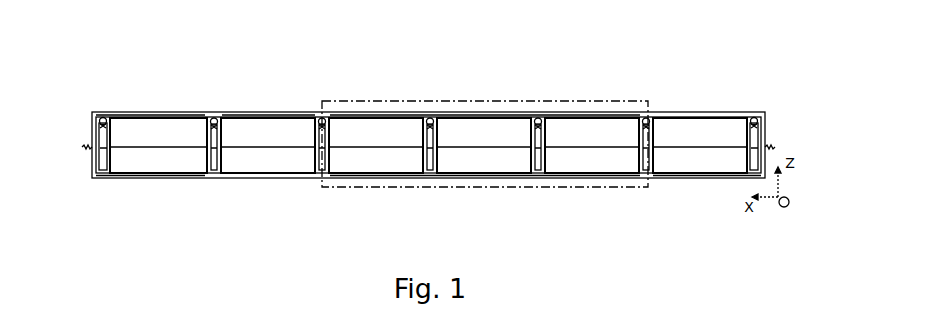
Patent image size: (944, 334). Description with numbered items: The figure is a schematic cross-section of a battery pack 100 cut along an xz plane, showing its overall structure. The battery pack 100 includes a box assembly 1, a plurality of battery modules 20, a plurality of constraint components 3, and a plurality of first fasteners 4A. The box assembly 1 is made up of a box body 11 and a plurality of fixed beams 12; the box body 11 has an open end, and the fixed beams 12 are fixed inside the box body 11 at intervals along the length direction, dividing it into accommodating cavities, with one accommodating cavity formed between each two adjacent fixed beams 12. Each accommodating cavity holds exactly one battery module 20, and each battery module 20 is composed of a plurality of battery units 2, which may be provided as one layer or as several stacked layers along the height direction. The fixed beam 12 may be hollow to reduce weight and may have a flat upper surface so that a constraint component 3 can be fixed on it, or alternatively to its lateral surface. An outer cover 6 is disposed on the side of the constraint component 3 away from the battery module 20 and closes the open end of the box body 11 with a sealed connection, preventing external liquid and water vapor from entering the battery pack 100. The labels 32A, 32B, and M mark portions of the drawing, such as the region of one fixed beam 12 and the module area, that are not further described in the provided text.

The battery pack 100 is at (452, 33).
The box assembly 1 is at (300, 180).
The battery unit 2 is at (157, 170).
The constraint component 3 is at (257, 113).
The battery module 20 is at (140, 112).
The first fastener 4A is at (213, 120).
The outer cover 6 is at (375, 113).
The box body 11 is at (368, 180).
The fixed beam 12 is at (429, 177).
The first partition portion 32A is at (537, 118).
The second partition portion 32B is at (548, 116).
The module unit M is at (572, 190).